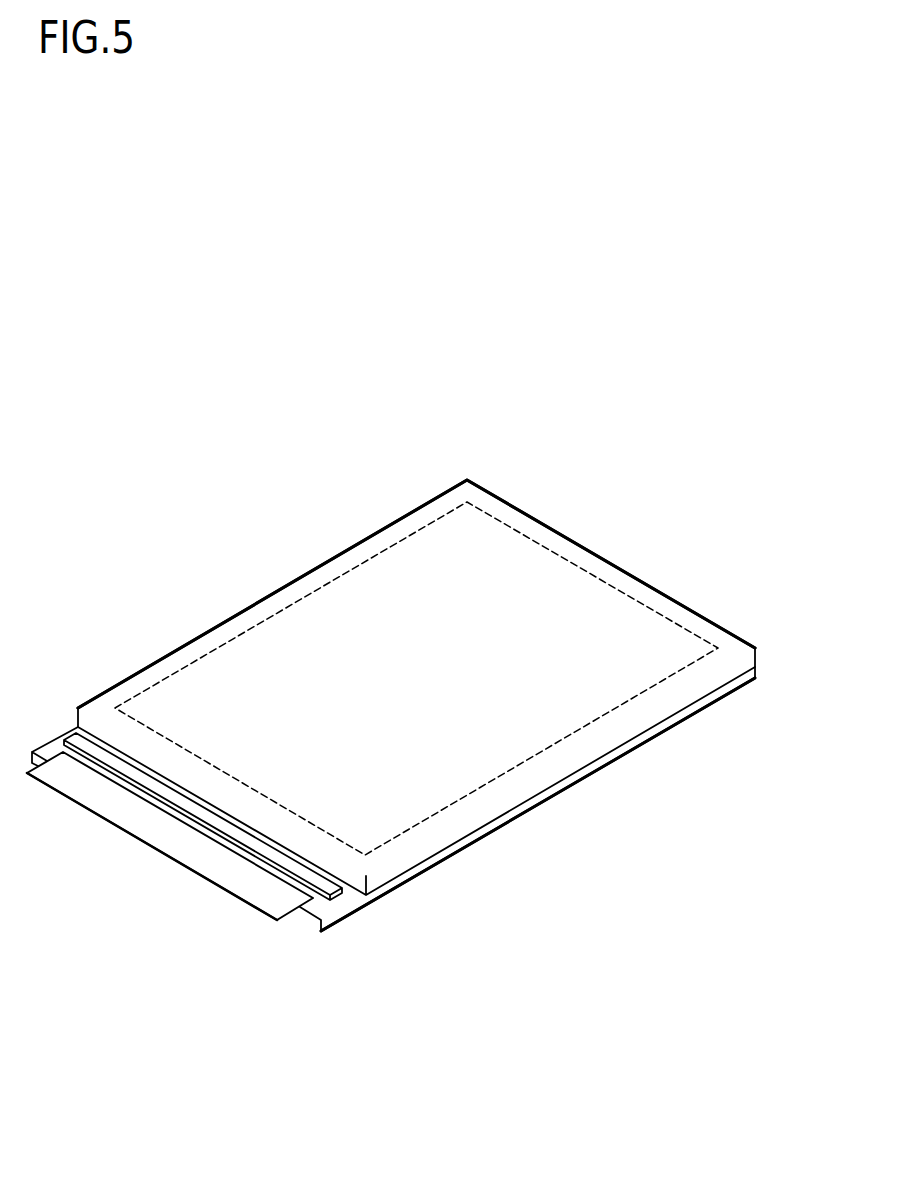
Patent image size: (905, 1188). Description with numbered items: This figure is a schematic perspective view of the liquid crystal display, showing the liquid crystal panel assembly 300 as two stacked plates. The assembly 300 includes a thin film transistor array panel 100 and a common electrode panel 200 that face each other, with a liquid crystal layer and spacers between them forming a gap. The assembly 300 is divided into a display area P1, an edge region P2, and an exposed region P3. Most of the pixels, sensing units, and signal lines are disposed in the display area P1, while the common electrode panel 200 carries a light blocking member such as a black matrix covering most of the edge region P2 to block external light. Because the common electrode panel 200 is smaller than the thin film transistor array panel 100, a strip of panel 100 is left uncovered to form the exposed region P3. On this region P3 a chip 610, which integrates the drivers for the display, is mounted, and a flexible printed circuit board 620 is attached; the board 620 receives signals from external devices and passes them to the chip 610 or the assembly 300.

The thin film transistor array panel 100 is at (757, 668).
The common electrode panel 200 is at (757, 652).
The liquid crystal panel assembly 300 is at (809, 632).
The chip 610 is at (72, 738).
The flexible printed circuit board 620 is at (122, 828).
The display area P1 is at (585, 689).
The edge region P2 is at (535, 779).
The exposed region P3 is at (334, 911).